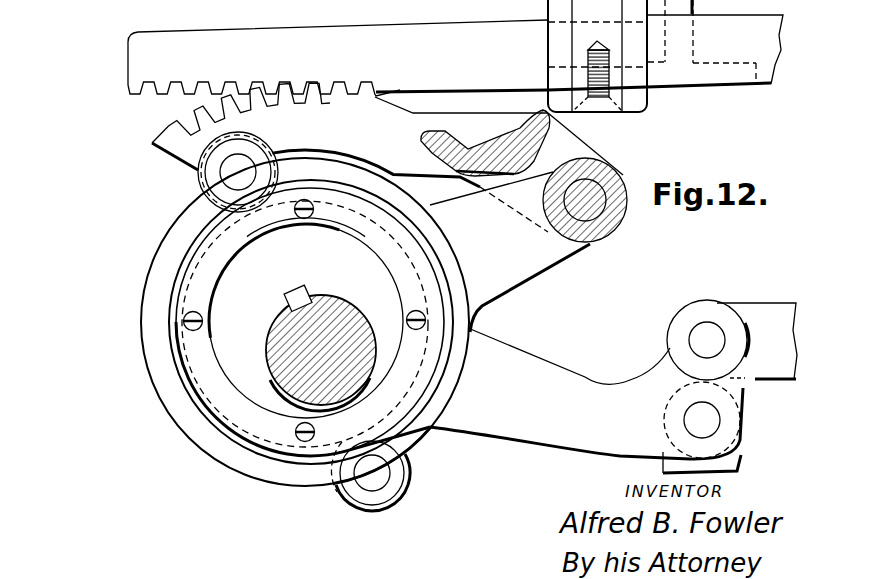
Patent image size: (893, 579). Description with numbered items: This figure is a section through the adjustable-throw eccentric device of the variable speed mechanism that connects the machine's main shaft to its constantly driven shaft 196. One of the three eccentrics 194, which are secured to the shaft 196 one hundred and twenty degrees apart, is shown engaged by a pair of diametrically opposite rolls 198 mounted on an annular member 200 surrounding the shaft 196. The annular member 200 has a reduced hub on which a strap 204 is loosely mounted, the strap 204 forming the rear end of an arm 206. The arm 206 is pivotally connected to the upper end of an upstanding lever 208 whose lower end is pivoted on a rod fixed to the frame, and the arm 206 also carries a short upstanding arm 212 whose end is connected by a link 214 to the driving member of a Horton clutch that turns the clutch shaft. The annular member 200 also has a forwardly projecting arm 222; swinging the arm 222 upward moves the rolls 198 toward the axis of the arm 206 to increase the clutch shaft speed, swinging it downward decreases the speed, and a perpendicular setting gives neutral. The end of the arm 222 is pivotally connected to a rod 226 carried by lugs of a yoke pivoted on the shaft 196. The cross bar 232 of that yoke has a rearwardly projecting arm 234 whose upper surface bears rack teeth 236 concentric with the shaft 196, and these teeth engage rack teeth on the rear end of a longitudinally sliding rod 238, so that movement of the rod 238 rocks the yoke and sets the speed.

The rod 238 is at (143, 52).
The rack teeth 236 is at (152, 142).
The rearwardly projecting arm 234 is at (316, 149).
The rolls 198 is at (200, 178).
The eccentrics 194 is at (208, 245).
The annular members 200 is at (153, 386).
The straps 204 is at (208, 428).
The shaft 196 is at (293, 393).
The cross bar 232 is at (482, 150).
The rod 226 is at (590, 188).
The forwardly projecting arms 222 is at (513, 270).
The short upstanding arms 212 is at (664, 358).
The links 214 is at (758, 313).
The arms 206 is at (586, 393).
The upstanding levers 208 is at (660, 468).